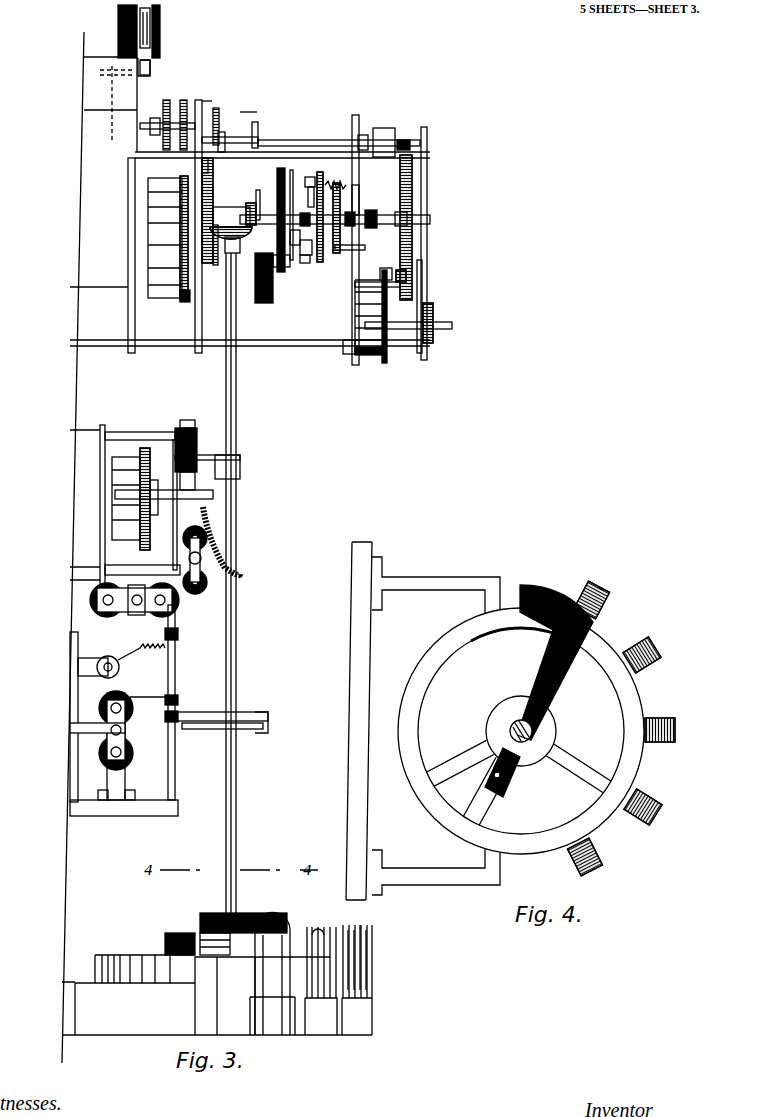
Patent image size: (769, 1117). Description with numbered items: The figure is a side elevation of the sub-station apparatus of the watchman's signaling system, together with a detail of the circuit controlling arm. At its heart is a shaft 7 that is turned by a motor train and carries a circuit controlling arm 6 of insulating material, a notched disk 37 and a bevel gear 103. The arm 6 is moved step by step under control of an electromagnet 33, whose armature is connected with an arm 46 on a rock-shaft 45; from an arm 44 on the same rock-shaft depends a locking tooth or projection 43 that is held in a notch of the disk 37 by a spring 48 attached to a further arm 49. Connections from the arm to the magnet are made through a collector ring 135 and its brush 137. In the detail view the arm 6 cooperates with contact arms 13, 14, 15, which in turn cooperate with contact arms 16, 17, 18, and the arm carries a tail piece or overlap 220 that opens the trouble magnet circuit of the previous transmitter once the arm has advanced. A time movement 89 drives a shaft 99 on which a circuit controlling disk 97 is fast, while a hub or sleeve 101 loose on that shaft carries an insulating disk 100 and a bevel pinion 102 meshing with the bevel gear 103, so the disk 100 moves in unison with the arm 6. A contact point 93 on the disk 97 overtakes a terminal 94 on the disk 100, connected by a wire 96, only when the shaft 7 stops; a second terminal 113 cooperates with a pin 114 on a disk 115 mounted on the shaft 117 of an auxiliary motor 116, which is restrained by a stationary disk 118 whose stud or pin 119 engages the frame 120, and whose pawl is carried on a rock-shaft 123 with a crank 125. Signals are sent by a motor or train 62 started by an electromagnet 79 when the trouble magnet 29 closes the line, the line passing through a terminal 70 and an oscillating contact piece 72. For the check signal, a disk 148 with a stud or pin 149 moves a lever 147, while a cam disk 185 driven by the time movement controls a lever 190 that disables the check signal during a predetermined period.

In FIG. 3, the terminal 70 is at (160, 55).
In FIG. 3, the contact piece 72 is at (150, 76).
In FIG. 3, the lever 190 is at (257, 112).
In FIG. 3, the cam disk 185 is at (258, 128).
In FIG. 3, the disk 148 is at (202, 168).
In FIG. 3, the time movement 89 is at (148, 225).
In FIG. 3, the stud or pin 149 is at (213, 190).
In FIG. 3, the lever 147 is at (231, 211).
In FIG. 3, the shaft 99 is at (252, 200).
In FIG. 3, the bevel pinion 102 is at (258, 192).
In FIG. 3, the bevel gear 103 is at (230, 240).
In FIG. 3, the shaft 7 is at (242, 818).
In FIG. 4, the shaft 7 is at (532, 731).
In FIG. 3, the insulating disk 100 is at (281, 168).
In FIG. 3, the hub or sleeve 101 is at (292, 170).
In FIG. 3, the circuit controlling disk 97 is at (305, 188).
In FIG. 3, the pin 114 is at (320, 172).
In FIG. 3, the crank 125 is at (340, 183).
In FIG. 3, the rock-shaft 123 is at (345, 178).
In FIG. 3, the stationary disk 118 is at (340, 195).
In FIG. 3, the shaft 117 is at (400, 220).
In FIG. 3, the stud or pin 119 is at (365, 248).
In FIG. 3, the contact point 93 is at (291, 241).
In FIG. 3, the wire 96 is at (307, 252).
In FIG. 3, the terminal 94 is at (273, 260).
In FIG. 3, the second terminal 113 is at (290, 262).
In FIG. 3, the disk 115 is at (310, 262).
In FIG. 3, the auxiliary motor 116 is at (427, 286).
In FIG. 3, the frame 120 is at (350, 352).
In FIG. 3, the motor or train 62 is at (112, 487).
In FIG. 3, the trouble magnet 29 is at (211, 561).
In FIG. 3, the electromagnet 79 is at (115, 618).
In FIG. 3, the spring 48 is at (121, 652).
In FIG. 3, the arm 49 is at (178, 636).
In FIG. 3, the rock-shaft 45 is at (175, 770).
In FIG. 3, the electromagnet 33 is at (128, 728).
In FIG. 3, the arm 46 is at (148, 697).
In FIG. 3, the arm 44 is at (250, 712).
In FIG. 3, the disk 37 is at (245, 729).
In FIG. 3, the locking tooth or projection 43 is at (268, 720).
In FIG. 3, the circuit controlling arm 6 is at (232, 912).
In FIG. 4, the circuit controlling arm 6 is at (540, 670).
In FIG. 3, the contact arm 13 is at (318, 930).
In FIG. 3, the contact arm 14 is at (345, 928).
In FIG. 3, the contact arm 15 is at (362, 928).
In FIG. 4, the contact arm 15 is at (582, 590).
In FIG. 3, the contact arm 18 is at (368, 938).
In FIG. 4, the contact arm 18 is at (598, 600).
In FIG. 3, the contact arm 17 is at (356, 960).
In FIG. 3, the contact arm 16 is at (350, 982).
In FIG. 4, the collector ring 135 is at (532, 752).
In FIG. 4, the tail piece or overlap 220 is at (522, 585).
In FIG. 4, the brush 137 is at (505, 755).